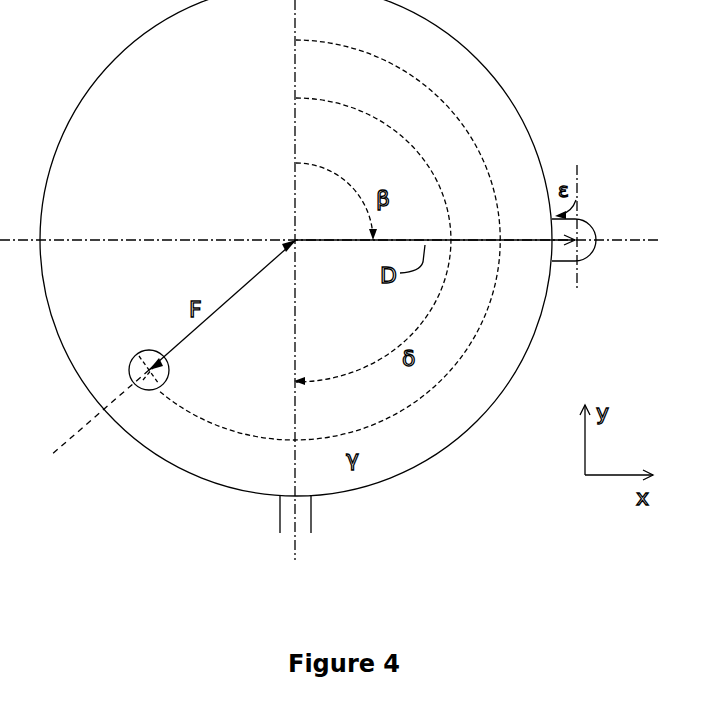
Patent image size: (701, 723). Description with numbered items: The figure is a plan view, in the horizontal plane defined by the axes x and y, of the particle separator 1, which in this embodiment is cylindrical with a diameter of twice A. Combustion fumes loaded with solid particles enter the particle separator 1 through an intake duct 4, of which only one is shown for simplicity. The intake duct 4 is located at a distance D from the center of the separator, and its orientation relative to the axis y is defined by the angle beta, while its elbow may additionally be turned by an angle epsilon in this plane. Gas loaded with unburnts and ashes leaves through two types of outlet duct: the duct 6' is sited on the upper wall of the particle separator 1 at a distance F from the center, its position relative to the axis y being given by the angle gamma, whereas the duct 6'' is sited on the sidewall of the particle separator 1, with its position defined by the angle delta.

The particle separator 1 is at (93, 83).
The intake duct 4 is at (585, 257).
The outlet duct sited on the upper wall 6' is at (162, 370).
The outlet duct sited on the sidewall 6'' is at (321, 526).